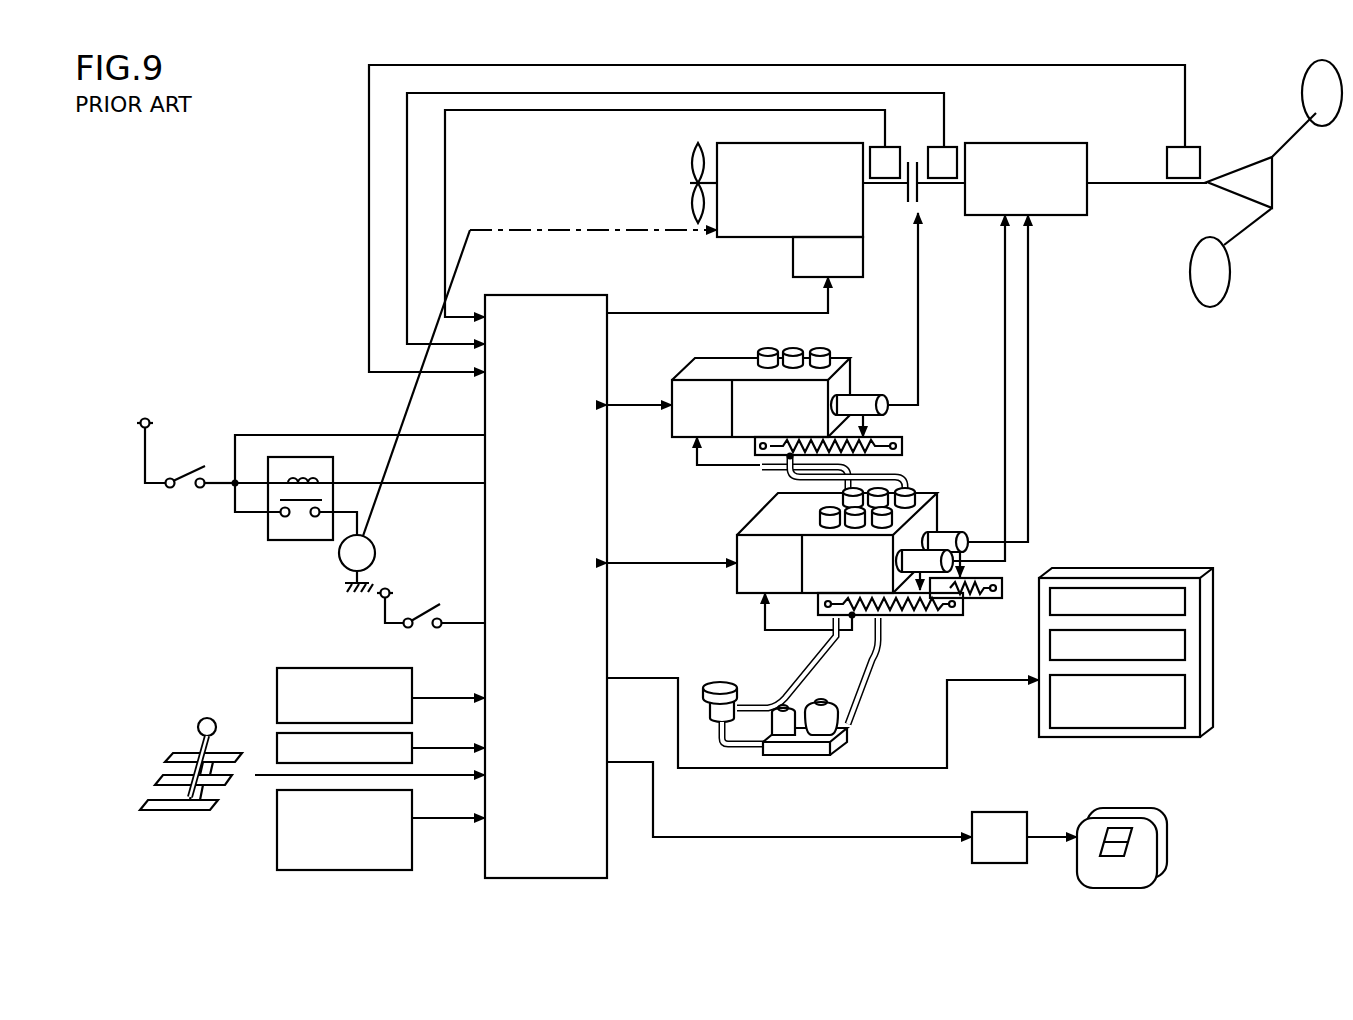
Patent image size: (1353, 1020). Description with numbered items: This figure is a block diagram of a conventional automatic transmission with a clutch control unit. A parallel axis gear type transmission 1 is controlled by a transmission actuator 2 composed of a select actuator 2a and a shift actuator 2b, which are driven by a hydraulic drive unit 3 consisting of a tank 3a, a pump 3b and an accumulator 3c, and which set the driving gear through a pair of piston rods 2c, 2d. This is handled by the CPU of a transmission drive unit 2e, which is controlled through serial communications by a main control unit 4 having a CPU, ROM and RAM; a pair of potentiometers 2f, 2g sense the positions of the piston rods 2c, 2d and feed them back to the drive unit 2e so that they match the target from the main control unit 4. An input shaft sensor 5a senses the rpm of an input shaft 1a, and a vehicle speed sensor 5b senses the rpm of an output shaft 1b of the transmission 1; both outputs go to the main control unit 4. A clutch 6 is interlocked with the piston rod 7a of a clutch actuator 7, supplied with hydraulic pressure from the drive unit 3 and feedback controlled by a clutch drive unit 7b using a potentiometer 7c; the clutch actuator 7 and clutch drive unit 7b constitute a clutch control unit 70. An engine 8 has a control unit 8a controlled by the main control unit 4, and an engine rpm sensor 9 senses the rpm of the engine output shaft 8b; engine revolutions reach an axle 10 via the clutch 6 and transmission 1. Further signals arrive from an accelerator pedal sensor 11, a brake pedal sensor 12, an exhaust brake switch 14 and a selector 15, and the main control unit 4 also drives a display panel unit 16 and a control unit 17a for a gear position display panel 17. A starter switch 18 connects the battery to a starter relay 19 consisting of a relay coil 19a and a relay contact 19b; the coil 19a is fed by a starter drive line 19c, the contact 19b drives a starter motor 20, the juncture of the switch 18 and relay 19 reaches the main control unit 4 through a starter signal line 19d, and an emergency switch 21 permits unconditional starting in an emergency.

The transmission 1 is at (1030, 143).
The input shaft 1a is at (944, 188).
The output shaft 1b is at (1118, 188).
The transmission actuator 2 is at (836, 445).
The select actuator 2a is at (930, 492).
The shift actuator 2b is at (930, 532).
The piston rod 2c is at (968, 538).
The piston rod 2d is at (958, 563).
The transmission drive unit 2e is at (757, 526).
The potentiometer 2f is at (984, 599).
The potentiometer 2g is at (910, 616).
The hydraulic drive unit 3 is at (775, 669).
The tank 3a is at (720, 682).
The pump 3b is at (783, 705).
The accumulator 3c is at (840, 710).
The main control unit 4 is at (560, 295).
The input shaft sensor 5a is at (944, 147).
The vehicle speed sensor 5b is at (1183, 147).
The clutch 6 is at (908, 158).
The clutch actuator 7 is at (848, 360).
The piston rod 7a is at (870, 393).
The clutch drive unit 7b is at (722, 368).
The potentiometer 7c is at (905, 440).
The clutch control unit 70 is at (789, 339).
The engine 8 is at (735, 143).
The engine control unit 8a is at (793, 258).
The output shaft 8b is at (880, 190).
The engine rpm sensor 9 is at (880, 147).
The axle 10 is at (1262, 152).
The accelerator pedal sensor 11 is at (298, 668).
The brake pedal sensor 12 is at (412, 738).
The exhaust brake switch 14 is at (412, 838).
The selector 15 is at (196, 718).
The display panel unit 16 is at (1039, 716).
The gear position display panel 17 is at (1103, 816).
The control unit 17a is at (1000, 812).
The starter switch 18 is at (202, 468).
The starter relay 19 is at (320, 503).
The relay coil 19a is at (306, 480).
The relay contact 19b is at (296, 535).
The starter drive line 19c is at (400, 484).
The starter signal line 19d is at (278, 435).
The starter motor 20 is at (381, 543).
The emergency switch 21 is at (438, 598).